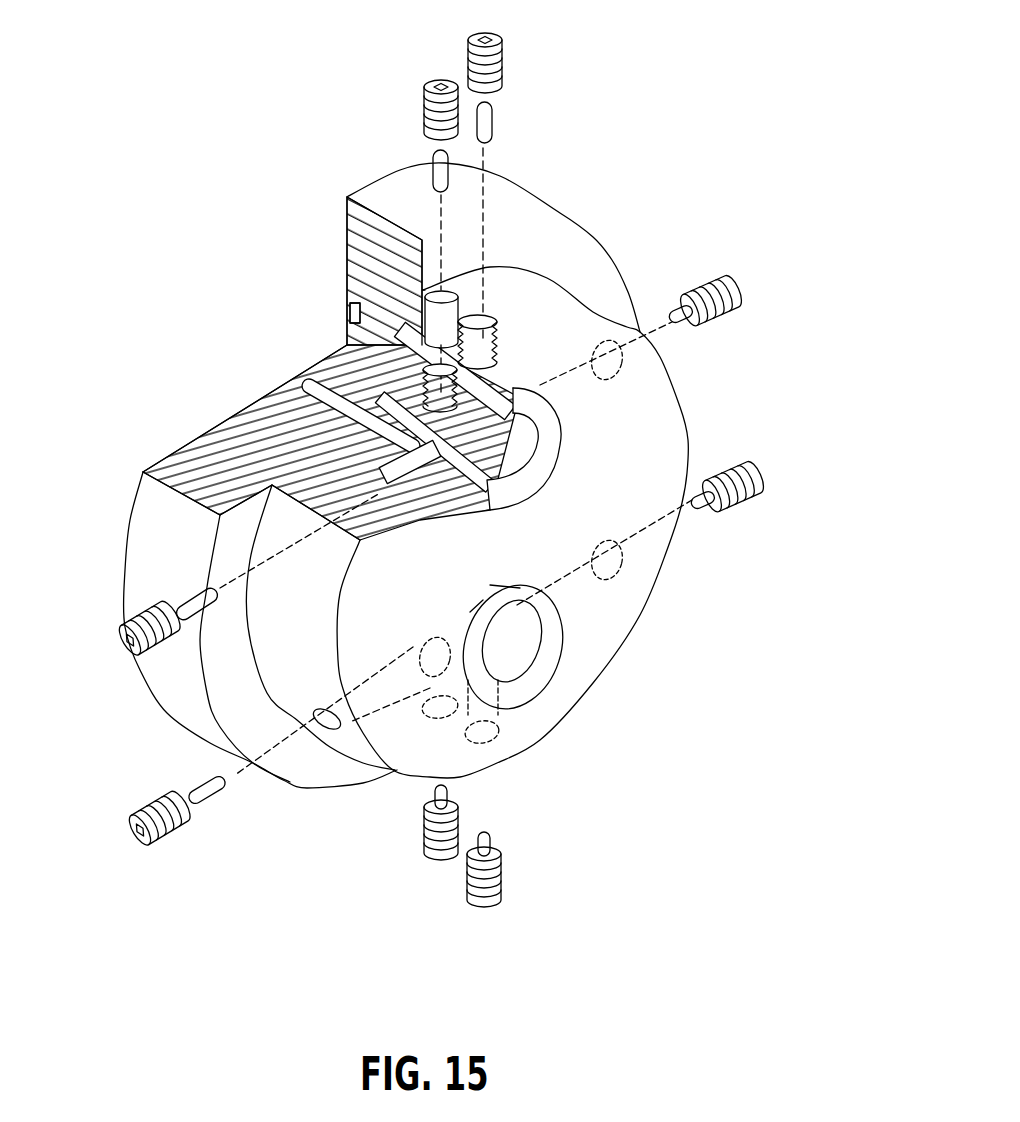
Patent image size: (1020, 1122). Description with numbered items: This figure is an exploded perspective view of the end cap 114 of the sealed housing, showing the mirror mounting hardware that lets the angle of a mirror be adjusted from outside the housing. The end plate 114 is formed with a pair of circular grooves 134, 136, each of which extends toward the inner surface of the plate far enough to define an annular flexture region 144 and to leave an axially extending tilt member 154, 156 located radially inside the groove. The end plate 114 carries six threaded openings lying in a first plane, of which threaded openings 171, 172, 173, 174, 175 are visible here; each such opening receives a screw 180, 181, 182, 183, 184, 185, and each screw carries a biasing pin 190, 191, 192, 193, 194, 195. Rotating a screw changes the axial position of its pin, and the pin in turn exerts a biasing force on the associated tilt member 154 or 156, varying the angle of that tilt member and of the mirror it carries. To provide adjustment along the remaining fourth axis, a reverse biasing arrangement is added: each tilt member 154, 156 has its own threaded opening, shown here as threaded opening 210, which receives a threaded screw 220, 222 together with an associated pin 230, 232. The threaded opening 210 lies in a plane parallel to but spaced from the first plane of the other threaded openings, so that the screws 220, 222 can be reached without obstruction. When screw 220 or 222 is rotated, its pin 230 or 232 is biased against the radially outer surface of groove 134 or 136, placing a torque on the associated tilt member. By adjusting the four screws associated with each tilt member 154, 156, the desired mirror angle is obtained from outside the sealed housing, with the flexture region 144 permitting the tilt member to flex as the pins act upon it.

The end cap 114 is at (577, 193).
The circular groove 134 is at (548, 440).
The circular groove 136 is at (540, 660).
The annular flexture region 144 is at (307, 367).
The tilt member 154 is at (530, 490).
The tilt member 156 is at (502, 627).
The threaded opening 171 is at (487, 323).
The threaded opening 172 is at (570, 397).
The threaded opening 173 is at (373, 667).
The threaded opening 174 is at (500, 713).
The threaded opening 175 is at (560, 567).
The screw 180 is at (128, 622).
The screw 181 is at (497, 62).
The screw 182 is at (723, 310).
The screw 183 is at (158, 833).
The screw 184 is at (498, 872).
The screw 185 is at (733, 500).
The biasing pin 190 is at (175, 598).
The biasing pin 191 is at (493, 128).
The biasing pin 192 is at (678, 320).
The biasing pin 193 is at (207, 795).
The biasing pin 194 is at (488, 835).
The biasing pin 195 is at (695, 510).
The threaded opening 210 is at (497, 377).
The threaded screw 220 is at (427, 107).
The threaded screw 222 is at (425, 843).
The pin 230 is at (433, 157).
The pin 232 is at (432, 792).